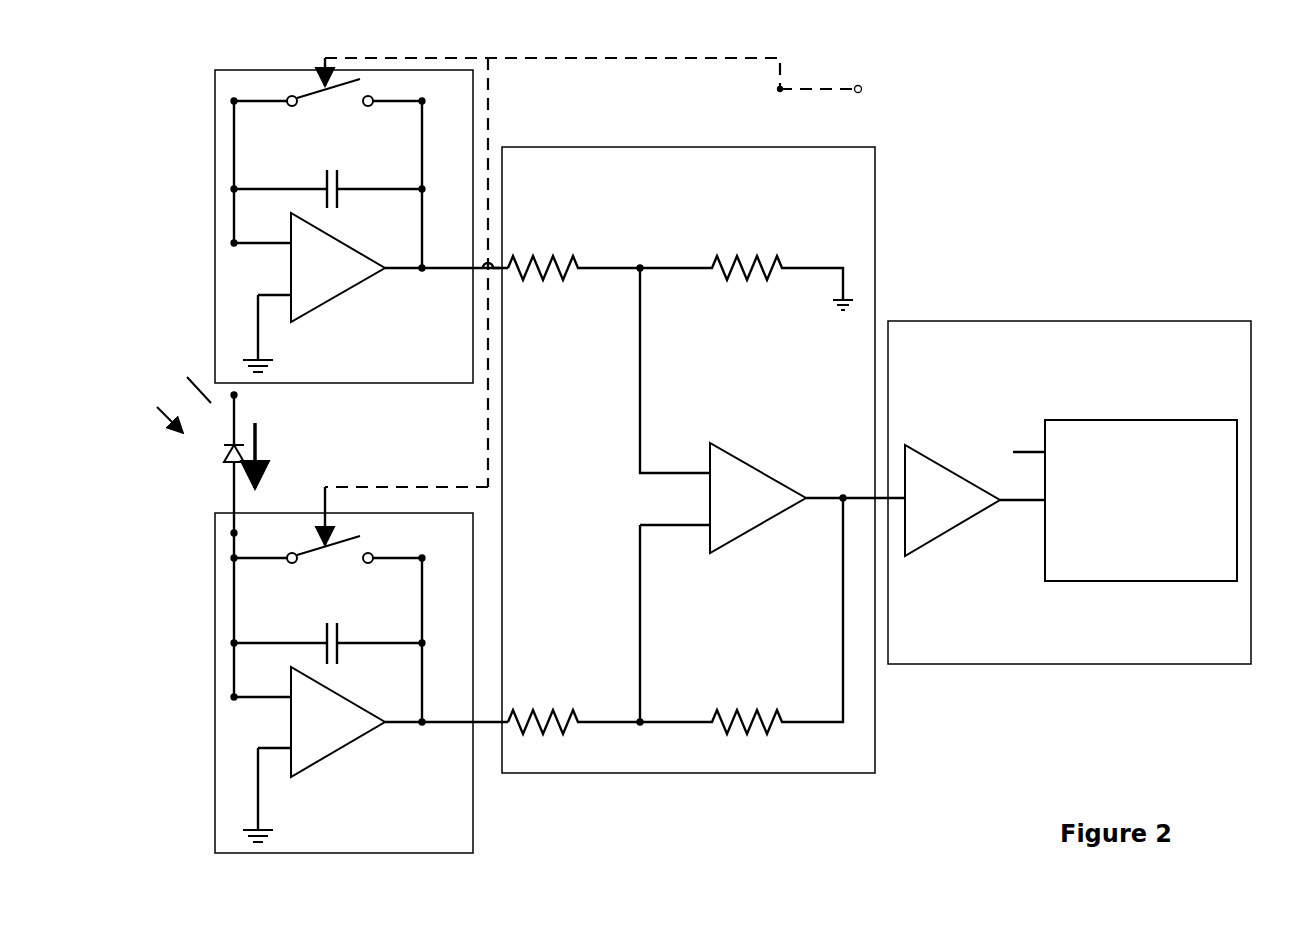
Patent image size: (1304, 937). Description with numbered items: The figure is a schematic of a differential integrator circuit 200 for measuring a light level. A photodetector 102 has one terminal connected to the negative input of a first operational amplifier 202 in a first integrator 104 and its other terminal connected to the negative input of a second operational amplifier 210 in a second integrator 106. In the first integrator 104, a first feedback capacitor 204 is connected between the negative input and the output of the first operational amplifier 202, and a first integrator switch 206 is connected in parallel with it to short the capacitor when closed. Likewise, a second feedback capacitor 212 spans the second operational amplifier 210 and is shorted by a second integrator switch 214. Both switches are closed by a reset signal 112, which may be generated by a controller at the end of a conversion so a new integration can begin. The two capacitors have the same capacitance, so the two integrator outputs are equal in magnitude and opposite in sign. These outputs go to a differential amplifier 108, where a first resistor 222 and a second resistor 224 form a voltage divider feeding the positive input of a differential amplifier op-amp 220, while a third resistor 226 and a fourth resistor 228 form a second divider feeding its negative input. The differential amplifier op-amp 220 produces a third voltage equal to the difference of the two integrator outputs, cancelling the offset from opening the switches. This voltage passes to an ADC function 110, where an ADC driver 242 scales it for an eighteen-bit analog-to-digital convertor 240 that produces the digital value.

The photodetector 102 is at (308, 462).
The first integrator 104 is at (357, 226).
The second integrator 106 is at (361, 683).
The differential amplifier 108 is at (694, 460).
The ADC function 110 is at (1069, 492).
The reset signal 112 is at (935, 104).
The differential integrator circuit 200 is at (980, 310).
The first operational amplifier 202 is at (365, 292).
The first feedback capacitor 204 is at (378, 198).
The first integrator switch 206 is at (285, 122).
The second operational amplifier 210 is at (369, 754).
The second feedback capacitor 212 is at (375, 652).
The second integrator switch 214 is at (283, 578).
The differential amplifier op-amp 220 is at (807, 498).
The first resistor 222 is at (580, 296).
The second resistor 224 is at (778, 296).
The third resistor 226 is at (588, 700).
The fourth resistor 228 is at (782, 712).
The 18-bit analog-to-digital convertor 240 is at (1141, 500).
The ADC driver 242 is at (975, 499).